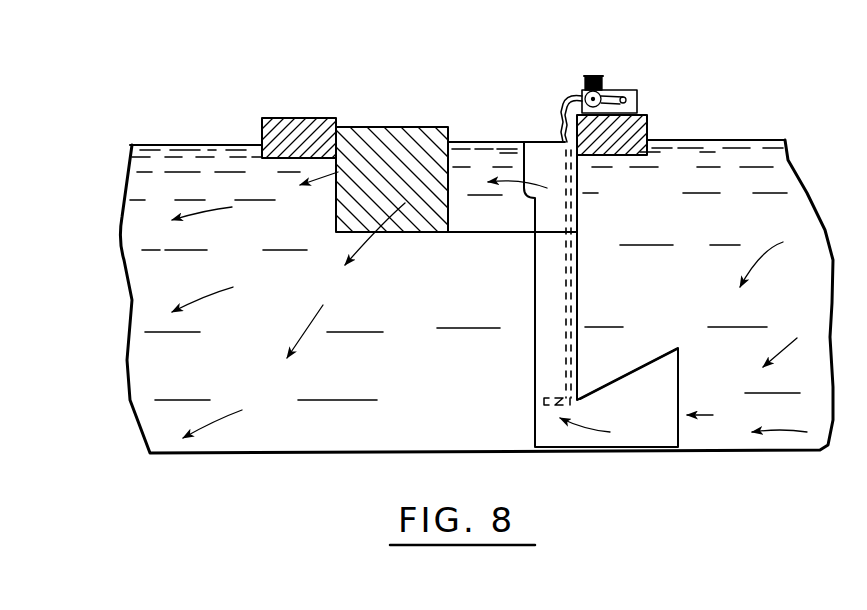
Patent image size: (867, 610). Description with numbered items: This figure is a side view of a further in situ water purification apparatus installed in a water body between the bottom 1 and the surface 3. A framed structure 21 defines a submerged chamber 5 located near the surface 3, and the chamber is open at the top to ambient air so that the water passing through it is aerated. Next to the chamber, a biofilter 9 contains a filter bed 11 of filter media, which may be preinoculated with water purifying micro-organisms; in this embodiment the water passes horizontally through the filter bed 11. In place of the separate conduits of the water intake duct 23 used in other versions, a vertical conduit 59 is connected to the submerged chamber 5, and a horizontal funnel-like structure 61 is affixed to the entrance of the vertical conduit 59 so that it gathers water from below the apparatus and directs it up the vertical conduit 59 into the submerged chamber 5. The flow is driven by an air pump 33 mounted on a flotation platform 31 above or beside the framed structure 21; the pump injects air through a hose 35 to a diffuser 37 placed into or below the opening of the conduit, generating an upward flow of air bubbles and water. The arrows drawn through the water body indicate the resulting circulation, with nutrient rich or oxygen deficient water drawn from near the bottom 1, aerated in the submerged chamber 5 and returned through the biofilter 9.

The bottom 1 is at (323, 425).
The surface 3 is at (202, 185).
The submerged chamber 5 is at (485, 163).
The biofilter 9 is at (340, 237).
The filter bed 11 is at (385, 158).
The framed structure 21 is at (608, 197).
The water intake duct 23 is at (587, 282).
The flotation platform 31 is at (283, 137).
The air pump 33 is at (620, 92).
The hose 35 is at (565, 107).
The diffuser 37 is at (543, 405).
The vertical conduit 59 is at (547, 349).
The funnel-like structure 61 is at (623, 395).